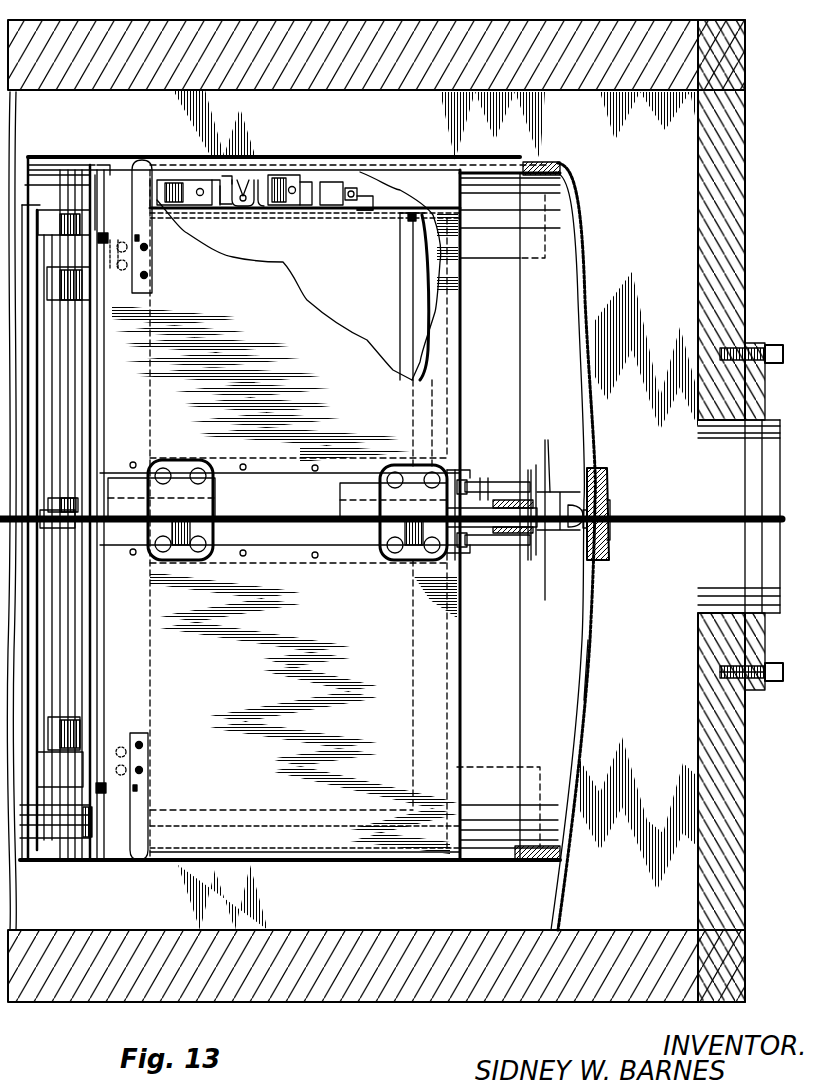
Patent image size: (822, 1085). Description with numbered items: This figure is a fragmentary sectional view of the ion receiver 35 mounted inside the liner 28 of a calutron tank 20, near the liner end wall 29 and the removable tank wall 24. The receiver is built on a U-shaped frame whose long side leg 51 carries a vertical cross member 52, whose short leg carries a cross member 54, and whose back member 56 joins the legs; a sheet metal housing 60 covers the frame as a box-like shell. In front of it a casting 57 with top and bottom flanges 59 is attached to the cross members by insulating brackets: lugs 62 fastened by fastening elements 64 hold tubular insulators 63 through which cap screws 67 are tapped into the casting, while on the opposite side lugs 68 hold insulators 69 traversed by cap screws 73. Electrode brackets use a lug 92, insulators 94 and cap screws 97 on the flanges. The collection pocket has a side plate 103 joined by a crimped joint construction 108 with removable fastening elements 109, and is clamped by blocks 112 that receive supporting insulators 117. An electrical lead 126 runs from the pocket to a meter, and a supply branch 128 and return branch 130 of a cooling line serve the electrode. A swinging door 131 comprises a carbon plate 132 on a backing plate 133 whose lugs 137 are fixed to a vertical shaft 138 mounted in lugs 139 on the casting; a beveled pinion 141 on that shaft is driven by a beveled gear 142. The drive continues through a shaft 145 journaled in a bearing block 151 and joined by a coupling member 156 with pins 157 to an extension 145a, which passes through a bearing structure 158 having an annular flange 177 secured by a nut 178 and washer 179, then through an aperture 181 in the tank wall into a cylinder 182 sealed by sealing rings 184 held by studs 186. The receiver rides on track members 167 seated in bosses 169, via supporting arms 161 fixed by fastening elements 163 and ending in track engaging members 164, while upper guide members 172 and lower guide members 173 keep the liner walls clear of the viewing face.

The tank 20 is at (435, 1008).
The removable wall 24 is at (700, 690).
The liner 28 is at (345, 866).
The wall 29 is at (585, 715).
The ion receiver 35 is at (598, 633).
The side leg 51 is at (300, 458).
The cross member 52 is at (160, 380).
The cross member 54 is at (367, 210).
The back member 56 is at (462, 470).
The casting 57 is at (78, 157).
The flanges 59 is at (106, 165).
The housing 60 is at (307, 361).
The lug 62 is at (125, 270).
The insulator 63 is at (103, 233).
The fastening elements 64 is at (150, 280).
The cap screws 67 is at (140, 238).
The lug 68 is at (335, 182).
The insulator 69 is at (312, 182).
The cap screws 73 is at (355, 188).
The lug 92 is at (285, 175).
The insulators 94 is at (245, 178).
The cap screws 97 is at (248, 180).
The side plate 103 is at (356, 277).
The crimped joint construction 108 is at (405, 283).
The fastening elements 109 is at (405, 225).
The blocks 112 is at (165, 180).
The insulators 117 is at (215, 205).
The electrical lead 126 is at (425, 290).
The supply branch 128 is at (512, 492).
The return branch 130 is at (520, 500).
The door 131 is at (27, 795).
The carbon plate 132 is at (45, 613).
The backing plate 133 is at (60, 636).
The lugs 137 is at (50, 210).
The shaft 138 is at (68, 658).
The lugs 139 is at (82, 270).
The beveled pinion 141 is at (75, 498).
The beveled gear 142 is at (85, 510).
The shaft 145 is at (505, 545).
The extension 145a is at (610, 530).
The bearing block 151 is at (497, 467).
The coupling member 156 is at (560, 483).
The pins 157 is at (535, 545).
The bearing structure 158 is at (612, 490).
The receiver supporting arms 161 is at (410, 552).
The fastening elements 163 is at (185, 555).
The track engaging members 164 is at (197, 457).
The track member 167 is at (258, 473).
The bosses 169 is at (572, 470).
The upper guide members 172 is at (135, 157).
The lower guide members 173 is at (150, 768).
The annular flange 177 is at (608, 540).
The nut 178 is at (563, 555).
The washer 179 is at (590, 560).
The aperture 181 is at (735, 602).
The cylinder 182 is at (745, 428).
The sealing rings 184 is at (750, 385).
The studs 186 is at (720, 672).